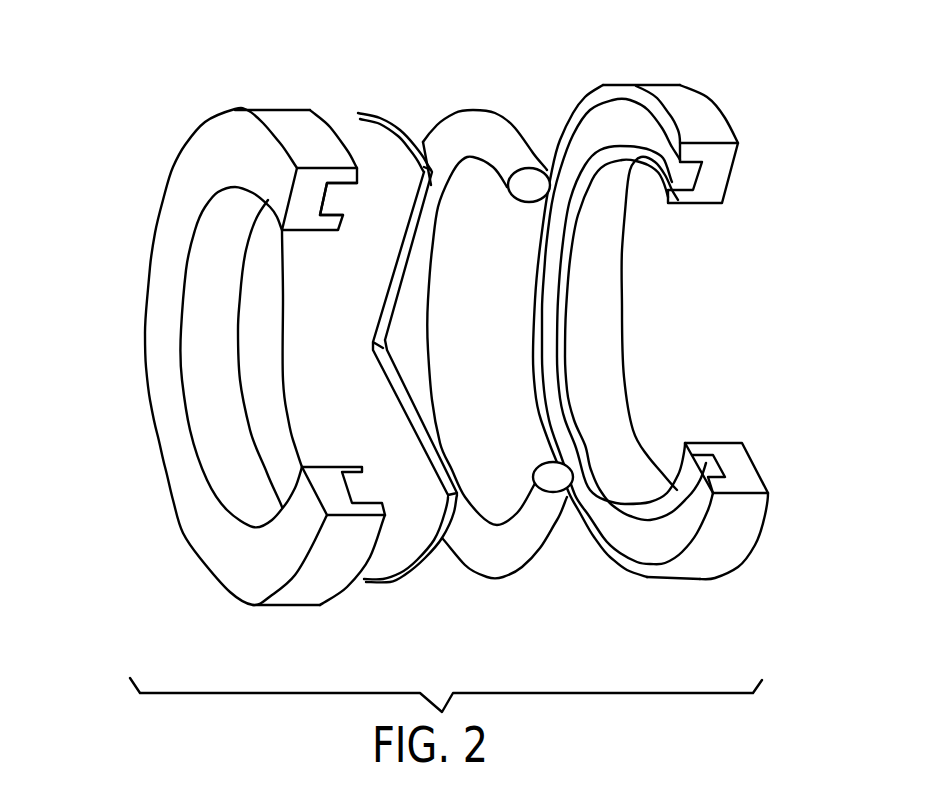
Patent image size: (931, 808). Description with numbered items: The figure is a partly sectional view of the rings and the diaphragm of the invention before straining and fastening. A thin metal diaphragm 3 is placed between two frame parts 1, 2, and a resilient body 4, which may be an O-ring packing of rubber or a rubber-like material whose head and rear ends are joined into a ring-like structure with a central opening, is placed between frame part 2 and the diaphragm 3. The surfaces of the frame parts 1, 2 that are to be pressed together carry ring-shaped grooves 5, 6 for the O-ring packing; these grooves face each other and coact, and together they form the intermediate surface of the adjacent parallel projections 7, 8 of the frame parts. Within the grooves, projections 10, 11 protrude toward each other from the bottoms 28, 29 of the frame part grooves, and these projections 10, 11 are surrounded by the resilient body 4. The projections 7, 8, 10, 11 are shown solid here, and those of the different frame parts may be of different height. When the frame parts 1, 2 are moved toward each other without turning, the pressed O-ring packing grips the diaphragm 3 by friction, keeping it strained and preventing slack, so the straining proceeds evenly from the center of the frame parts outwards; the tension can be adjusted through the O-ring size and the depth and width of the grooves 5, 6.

The frame part 1 is at (200, 558).
The frame part 2 is at (703, 193).
The diaphragm 3 is at (373, 167).
The resilient body 4 is at (530, 183).
The ring-shaped groove 5 is at (345, 478).
The ring-shaped groove 6 is at (718, 468).
The projection 7 is at (342, 175).
The projection 8 is at (610, 90).
The projection 10 is at (683, 210).
The projection 11 is at (330, 223).
The bottom of frame part groove 28 is at (695, 167).
The bottom of frame part groove 29 is at (333, 197).